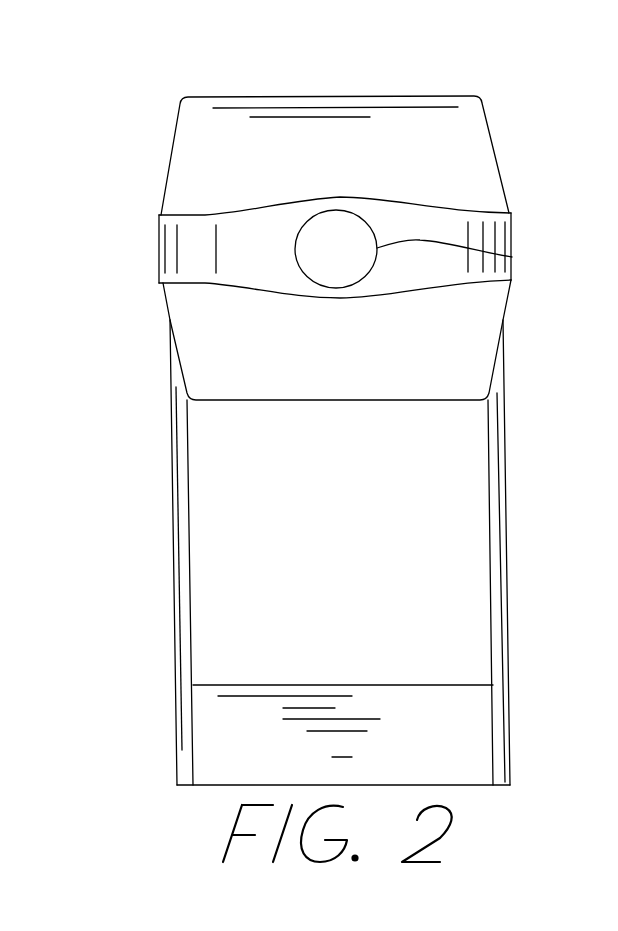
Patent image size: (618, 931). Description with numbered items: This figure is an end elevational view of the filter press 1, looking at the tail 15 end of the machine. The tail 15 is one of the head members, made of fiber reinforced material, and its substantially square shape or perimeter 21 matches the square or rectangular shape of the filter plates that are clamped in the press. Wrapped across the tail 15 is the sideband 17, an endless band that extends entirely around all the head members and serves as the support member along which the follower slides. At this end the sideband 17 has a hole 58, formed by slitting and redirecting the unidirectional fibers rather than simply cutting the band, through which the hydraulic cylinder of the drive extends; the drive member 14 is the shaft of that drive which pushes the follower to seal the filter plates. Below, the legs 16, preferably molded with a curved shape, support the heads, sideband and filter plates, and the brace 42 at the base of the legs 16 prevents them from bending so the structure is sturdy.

The filter press 1 is at (118, 95).
The tail 15 is at (390, 123).
The perimeter 21 is at (247, 96).
The sideband 17 is at (193, 252).
The hole 58 is at (512, 257).
The drive member 14 is at (343, 257).
The legs 16 is at (488, 608).
The brace 42 is at (240, 722).